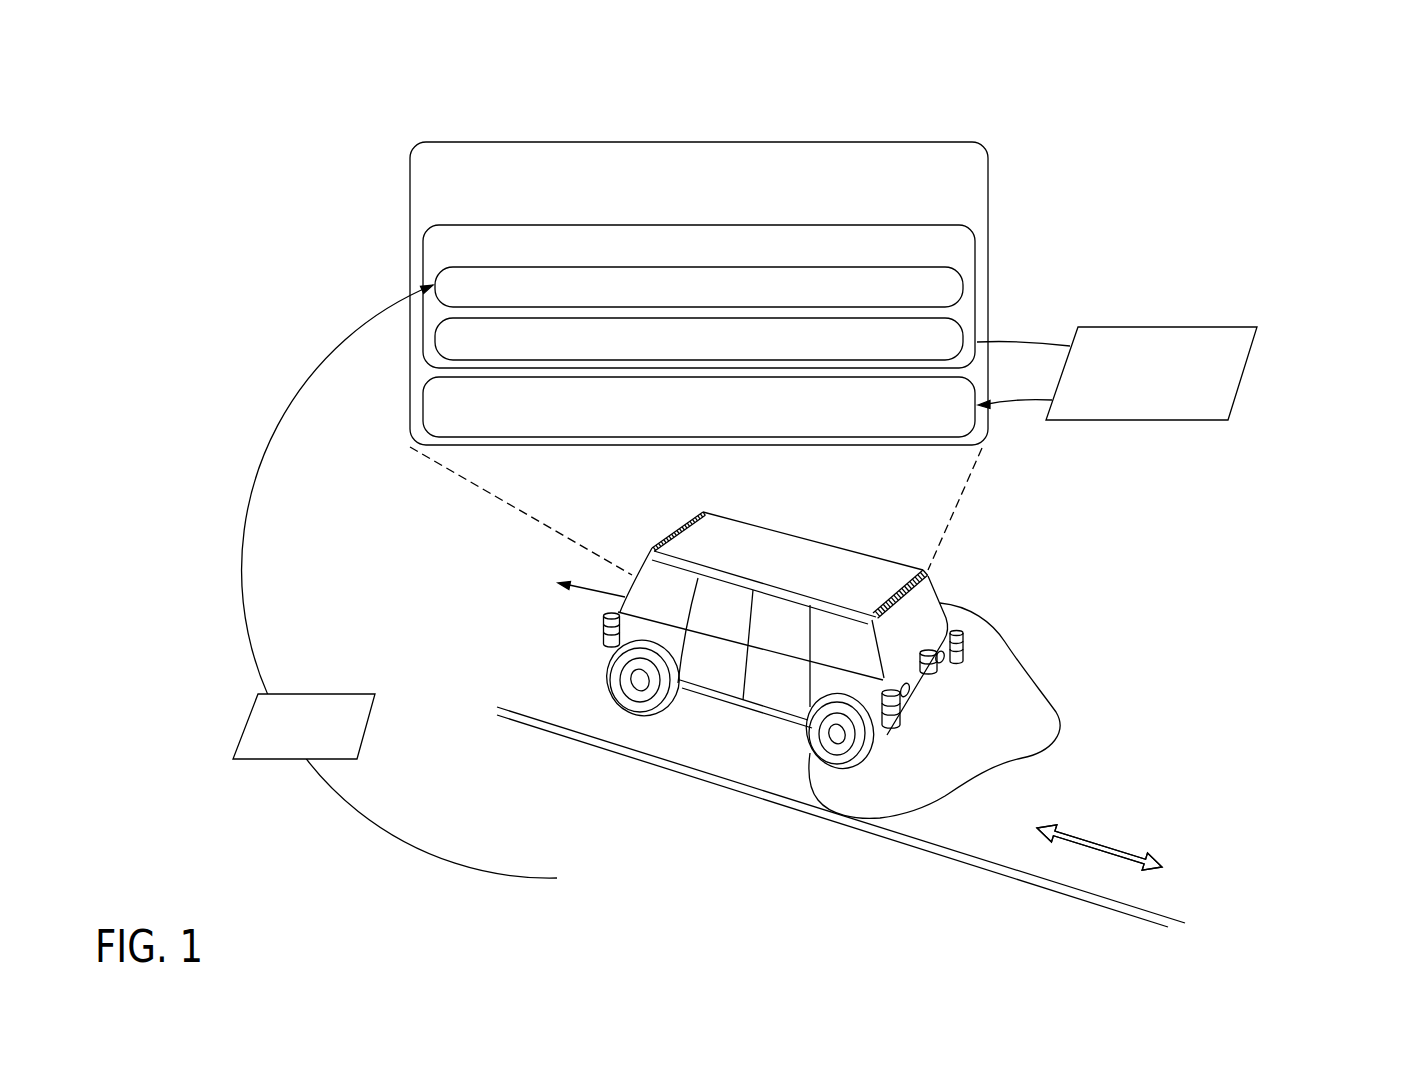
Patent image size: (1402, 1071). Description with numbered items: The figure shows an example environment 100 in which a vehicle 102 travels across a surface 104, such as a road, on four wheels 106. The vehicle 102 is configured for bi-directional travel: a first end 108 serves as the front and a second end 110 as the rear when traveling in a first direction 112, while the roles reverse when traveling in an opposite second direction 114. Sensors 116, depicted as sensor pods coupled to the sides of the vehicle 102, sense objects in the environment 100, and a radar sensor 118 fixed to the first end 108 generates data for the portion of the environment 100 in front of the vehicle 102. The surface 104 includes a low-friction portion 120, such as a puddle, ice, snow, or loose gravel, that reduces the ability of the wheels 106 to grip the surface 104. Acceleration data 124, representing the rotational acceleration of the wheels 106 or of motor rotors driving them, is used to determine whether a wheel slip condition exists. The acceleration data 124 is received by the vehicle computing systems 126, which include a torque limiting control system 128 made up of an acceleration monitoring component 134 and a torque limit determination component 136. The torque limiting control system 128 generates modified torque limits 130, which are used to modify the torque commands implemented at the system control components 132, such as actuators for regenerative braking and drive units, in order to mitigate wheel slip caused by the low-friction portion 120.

The environment 100 is at (208, 103).
The vehicle 102 is at (782, 717).
The surface 104 is at (743, 762).
The wheels 106 is at (627, 693).
The first end 108 is at (900, 748).
The second end 110 is at (652, 523).
The first direction 112 is at (1120, 853).
The second direction 114 is at (1078, 841).
The sensors 116 is at (603, 640).
The radar sensor 118 is at (953, 655).
The low-friction portion 120 is at (1010, 705).
The acceleration data 124 is at (346, 753).
The vehicle computing system(s) 126 is at (682, 205).
The torque limiting control system 128 is at (863, 256).
The modified torque limits 130 is at (1134, 413).
The system control components 132 is at (882, 433).
The acceleration monitoring component 134 is at (832, 301).
The torque limit determination component 136 is at (842, 353).